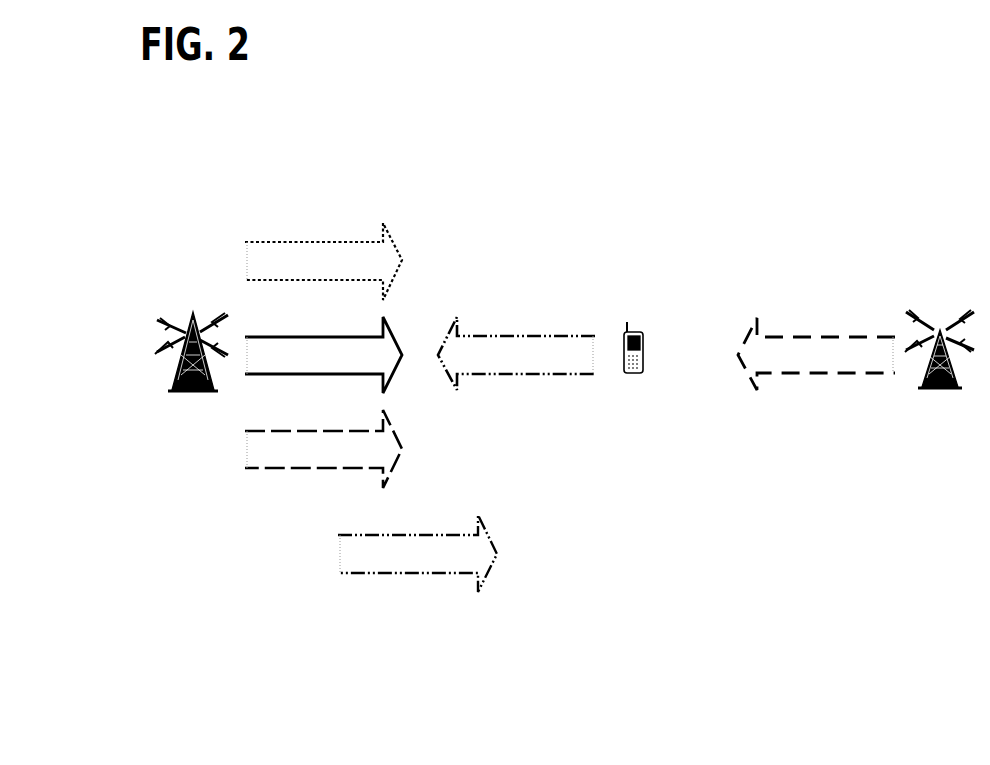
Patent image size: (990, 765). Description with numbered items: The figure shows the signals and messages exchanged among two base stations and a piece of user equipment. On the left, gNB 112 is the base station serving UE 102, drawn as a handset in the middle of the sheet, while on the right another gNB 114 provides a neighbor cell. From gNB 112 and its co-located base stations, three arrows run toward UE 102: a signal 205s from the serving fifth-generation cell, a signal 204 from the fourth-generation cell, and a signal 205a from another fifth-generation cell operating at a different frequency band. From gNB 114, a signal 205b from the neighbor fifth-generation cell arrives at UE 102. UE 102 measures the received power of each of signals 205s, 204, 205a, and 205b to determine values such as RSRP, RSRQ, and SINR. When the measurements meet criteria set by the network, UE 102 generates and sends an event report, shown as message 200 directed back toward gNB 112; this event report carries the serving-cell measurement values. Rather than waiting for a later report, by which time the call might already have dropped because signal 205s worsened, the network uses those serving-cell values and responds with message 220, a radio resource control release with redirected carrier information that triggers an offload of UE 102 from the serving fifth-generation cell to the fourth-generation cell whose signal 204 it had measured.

The gNB 112 is at (193, 315).
The gNB 114 is at (925, 388).
The UE 102 is at (633, 375).
The signal 204 is at (303, 273).
The signal 205s is at (300, 367).
The signal 205a is at (300, 461).
The signal 205b is at (776, 368).
The message 200 is at (501, 366).
The message 220 is at (398, 566).